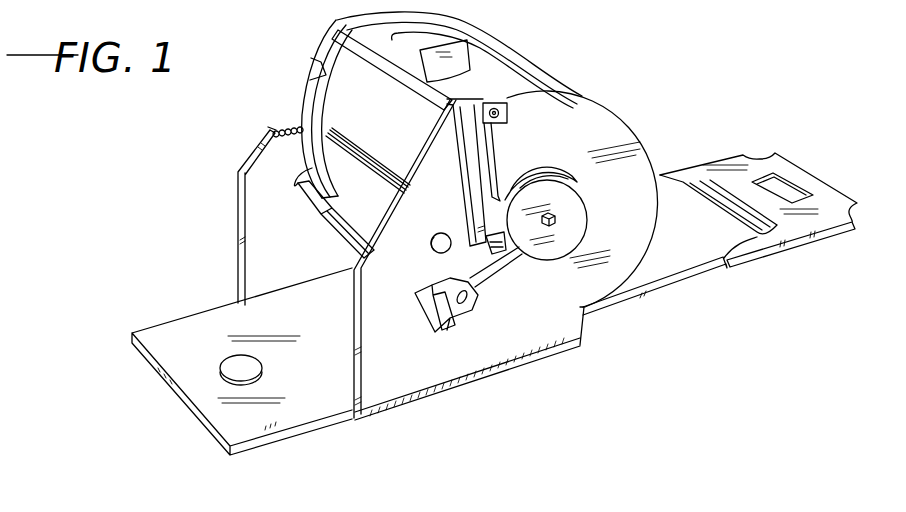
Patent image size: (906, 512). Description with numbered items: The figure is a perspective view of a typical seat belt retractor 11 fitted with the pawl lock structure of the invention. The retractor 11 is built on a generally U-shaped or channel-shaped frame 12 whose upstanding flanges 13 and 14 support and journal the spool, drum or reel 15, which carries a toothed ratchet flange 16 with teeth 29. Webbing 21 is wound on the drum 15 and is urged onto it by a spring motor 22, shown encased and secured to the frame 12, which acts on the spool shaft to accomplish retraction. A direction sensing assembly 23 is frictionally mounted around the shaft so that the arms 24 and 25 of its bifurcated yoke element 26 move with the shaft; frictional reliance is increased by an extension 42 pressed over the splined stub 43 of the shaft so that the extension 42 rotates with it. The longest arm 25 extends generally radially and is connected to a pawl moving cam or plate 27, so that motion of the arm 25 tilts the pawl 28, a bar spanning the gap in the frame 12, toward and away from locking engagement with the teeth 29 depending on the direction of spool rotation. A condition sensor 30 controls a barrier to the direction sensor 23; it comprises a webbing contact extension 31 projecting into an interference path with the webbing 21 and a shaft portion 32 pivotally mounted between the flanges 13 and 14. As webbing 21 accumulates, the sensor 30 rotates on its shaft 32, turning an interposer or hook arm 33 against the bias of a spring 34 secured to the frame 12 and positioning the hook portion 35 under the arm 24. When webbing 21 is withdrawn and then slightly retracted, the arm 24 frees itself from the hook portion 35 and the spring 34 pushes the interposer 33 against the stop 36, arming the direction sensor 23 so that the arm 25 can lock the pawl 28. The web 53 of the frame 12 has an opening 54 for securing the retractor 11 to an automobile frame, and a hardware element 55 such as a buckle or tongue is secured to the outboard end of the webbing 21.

The retractor 11 is at (407, 434).
The frame 12 is at (576, 340).
The flange 13 is at (593, 112).
The flange 14 is at (256, 188).
The spool 15 is at (302, 115).
The ratchet flange 16 is at (323, 66).
The webbing 21 is at (677, 268).
The spring motor 22 is at (350, 127).
The direction sensing assembly 23 is at (501, 296).
The arm 24 is at (498, 190).
The arm 25 is at (500, 268).
The bifurcated yoke element 26 is at (523, 180).
The pawl moving cam or plate 27 is at (463, 325).
The pawl 28 is at (332, 232).
The teeth 29 is at (312, 168).
The condition sensor 30 is at (408, 113).
The webbing contact extension 31 is at (513, 54).
The shaft portion 32 is at (396, 68).
The interposer or hook arm 33 is at (470, 186).
The spring 34 is at (483, 148).
The hook portion 35 is at (497, 245).
The stop 36 is at (432, 245).
The extension 42 is at (583, 222).
The splined stub 43 is at (560, 205).
The web 53 is at (340, 398).
The opening 54 is at (252, 370).
The hardware element 55 is at (790, 237).